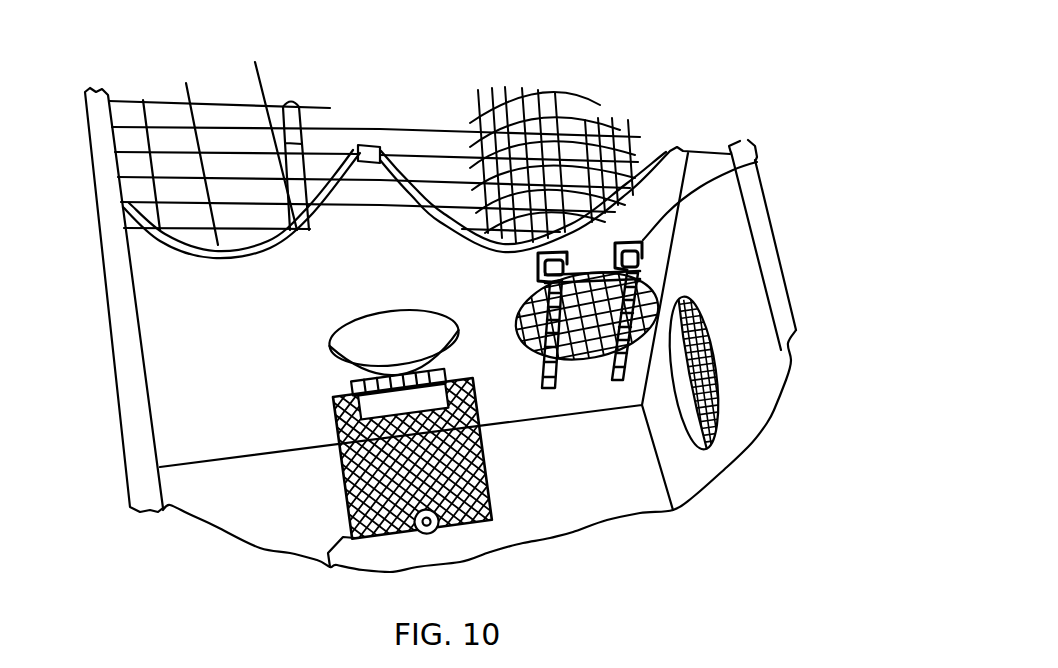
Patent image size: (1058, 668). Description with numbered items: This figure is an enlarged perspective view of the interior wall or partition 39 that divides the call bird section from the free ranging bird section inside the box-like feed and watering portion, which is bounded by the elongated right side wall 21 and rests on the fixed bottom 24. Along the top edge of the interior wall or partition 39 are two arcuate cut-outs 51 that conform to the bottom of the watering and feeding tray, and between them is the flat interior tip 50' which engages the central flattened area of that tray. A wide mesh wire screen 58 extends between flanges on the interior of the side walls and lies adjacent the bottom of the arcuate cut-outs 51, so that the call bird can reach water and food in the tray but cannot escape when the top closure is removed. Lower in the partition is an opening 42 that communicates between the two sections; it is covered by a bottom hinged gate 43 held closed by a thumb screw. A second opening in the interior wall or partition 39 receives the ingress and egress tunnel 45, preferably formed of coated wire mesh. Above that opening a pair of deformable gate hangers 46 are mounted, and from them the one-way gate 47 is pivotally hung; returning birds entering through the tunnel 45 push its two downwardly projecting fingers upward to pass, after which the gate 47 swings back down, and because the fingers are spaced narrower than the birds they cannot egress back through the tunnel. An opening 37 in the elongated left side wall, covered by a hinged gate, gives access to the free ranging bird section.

The elongated right side wall 21 is at (737, 410).
The fixed bottom 24 is at (242, 498).
The opening 37 is at (680, 370).
The interior wall or partition 39 is at (170, 363).
The opening 42 is at (380, 327).
The bottom hinged gate 43 is at (335, 567).
The ingress and egress tunnel 45 is at (647, 283).
The deformable gate hangers 46 is at (740, 141).
The one-way gate 47 is at (548, 388).
The flat interior tip 50' is at (394, 106).
The arcuate cut-outs 51 is at (200, 247).
The wide mesh wire screen 58 is at (143, 100).